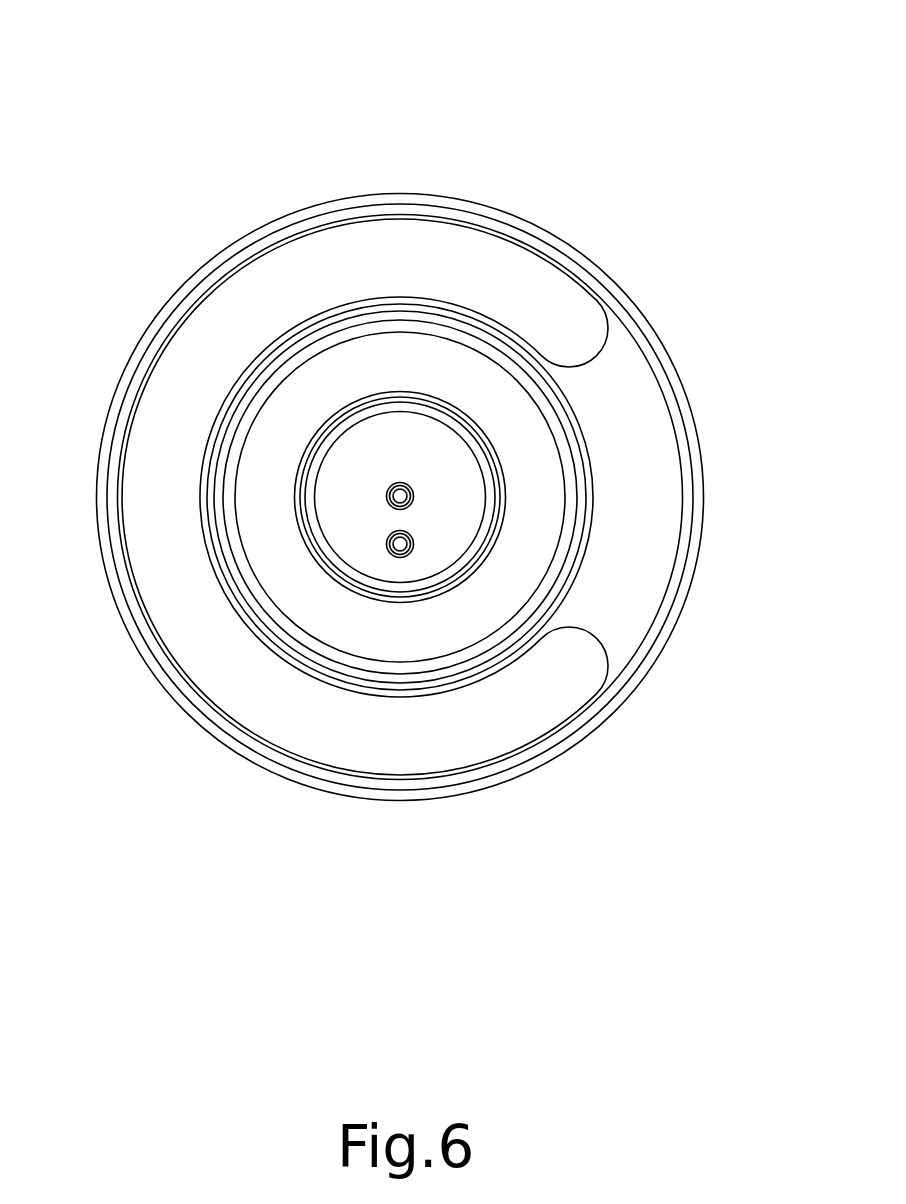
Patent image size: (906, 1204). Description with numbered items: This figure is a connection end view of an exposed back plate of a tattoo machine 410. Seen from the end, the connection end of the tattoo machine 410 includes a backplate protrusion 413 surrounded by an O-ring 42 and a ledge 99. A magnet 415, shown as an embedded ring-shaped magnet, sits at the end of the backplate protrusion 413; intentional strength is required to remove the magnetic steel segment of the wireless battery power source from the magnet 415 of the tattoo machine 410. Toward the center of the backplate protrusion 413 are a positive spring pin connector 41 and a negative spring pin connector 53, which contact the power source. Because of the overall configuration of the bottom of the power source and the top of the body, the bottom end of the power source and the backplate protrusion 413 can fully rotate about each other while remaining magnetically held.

The tattoo machine 410 is at (157, 142).
The ledge 99 is at (495, 268).
The magnet 415 is at (530, 460).
The positive spring pin connector 41 is at (383, 490).
The O-ring 42 is at (595, 482).
The backplate protrusion 413 is at (605, 600).
The negative spring pin connector 53 is at (396, 548).